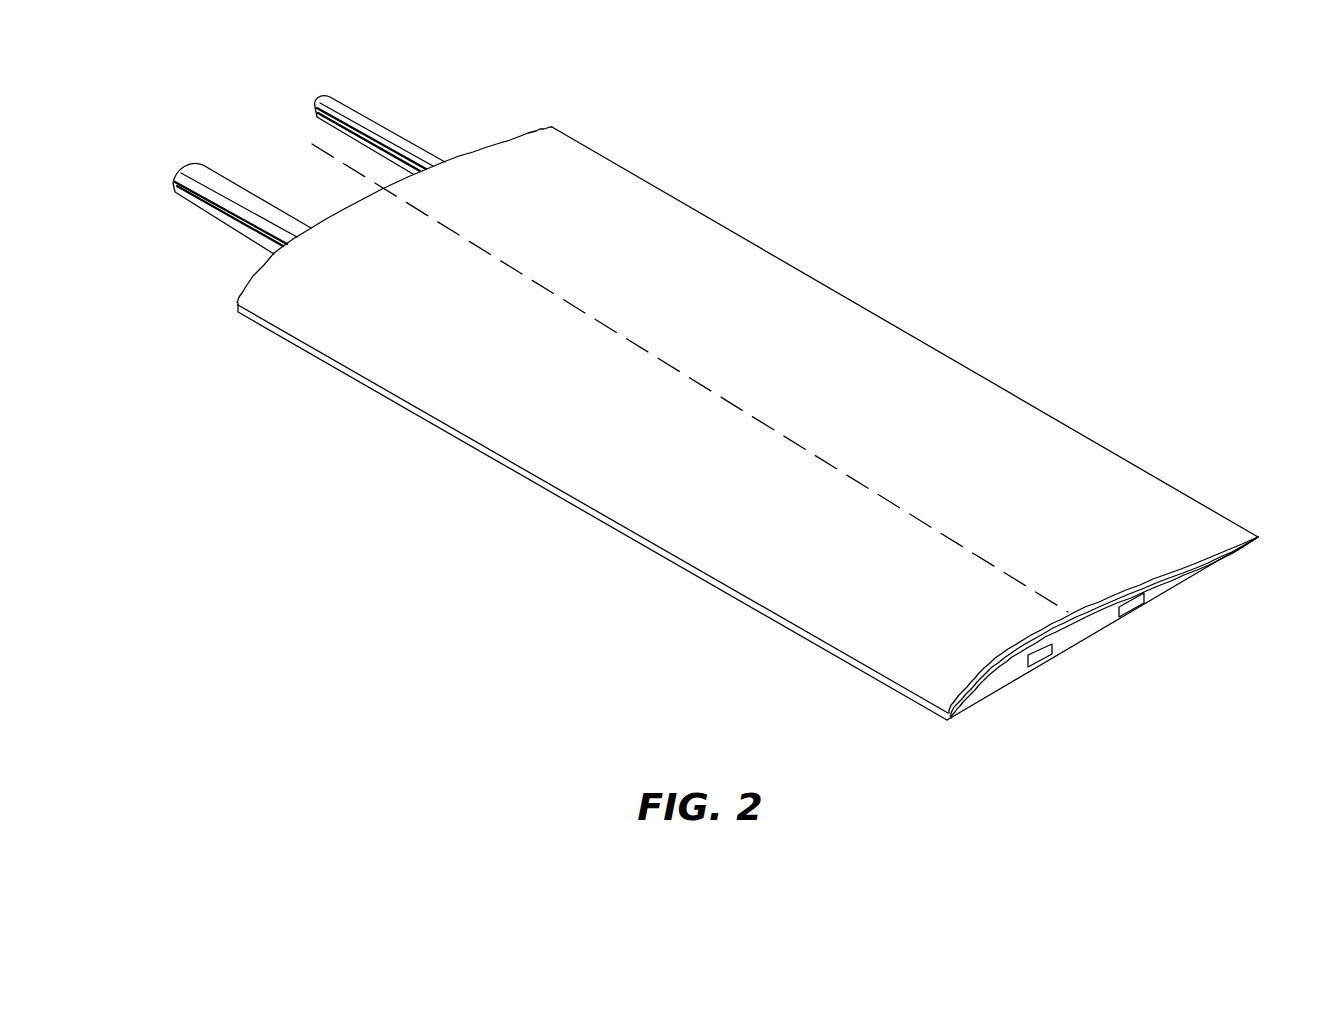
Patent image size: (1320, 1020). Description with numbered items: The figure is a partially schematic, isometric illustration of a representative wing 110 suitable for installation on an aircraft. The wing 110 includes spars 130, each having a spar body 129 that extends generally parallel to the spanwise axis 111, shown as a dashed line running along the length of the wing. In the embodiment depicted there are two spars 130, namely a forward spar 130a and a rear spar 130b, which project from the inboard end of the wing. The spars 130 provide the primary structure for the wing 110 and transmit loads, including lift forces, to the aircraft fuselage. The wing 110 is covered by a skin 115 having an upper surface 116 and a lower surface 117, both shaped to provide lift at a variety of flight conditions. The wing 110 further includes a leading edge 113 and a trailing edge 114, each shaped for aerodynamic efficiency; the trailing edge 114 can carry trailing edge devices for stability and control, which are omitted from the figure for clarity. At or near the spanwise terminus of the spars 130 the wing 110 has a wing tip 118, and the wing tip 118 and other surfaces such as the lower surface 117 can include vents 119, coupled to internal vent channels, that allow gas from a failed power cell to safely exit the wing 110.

The wing 110 is at (931, 238).
The spanwise axis 111 is at (640, 350).
The leading edge 113 is at (773, 616).
The trailing edge 114 is at (820, 283).
The skin 115 is at (946, 420).
The upper surface 116 is at (1060, 498).
The lower surface 117 is at (1072, 650).
The wing tip 118 is at (1107, 624).
The vents 119 is at (1143, 607).
The spar body 129 is at (407, 150).
The spars 130 is at (236, 104).
The forward spar 130a is at (232, 178).
The rear spar 130b is at (352, 103).